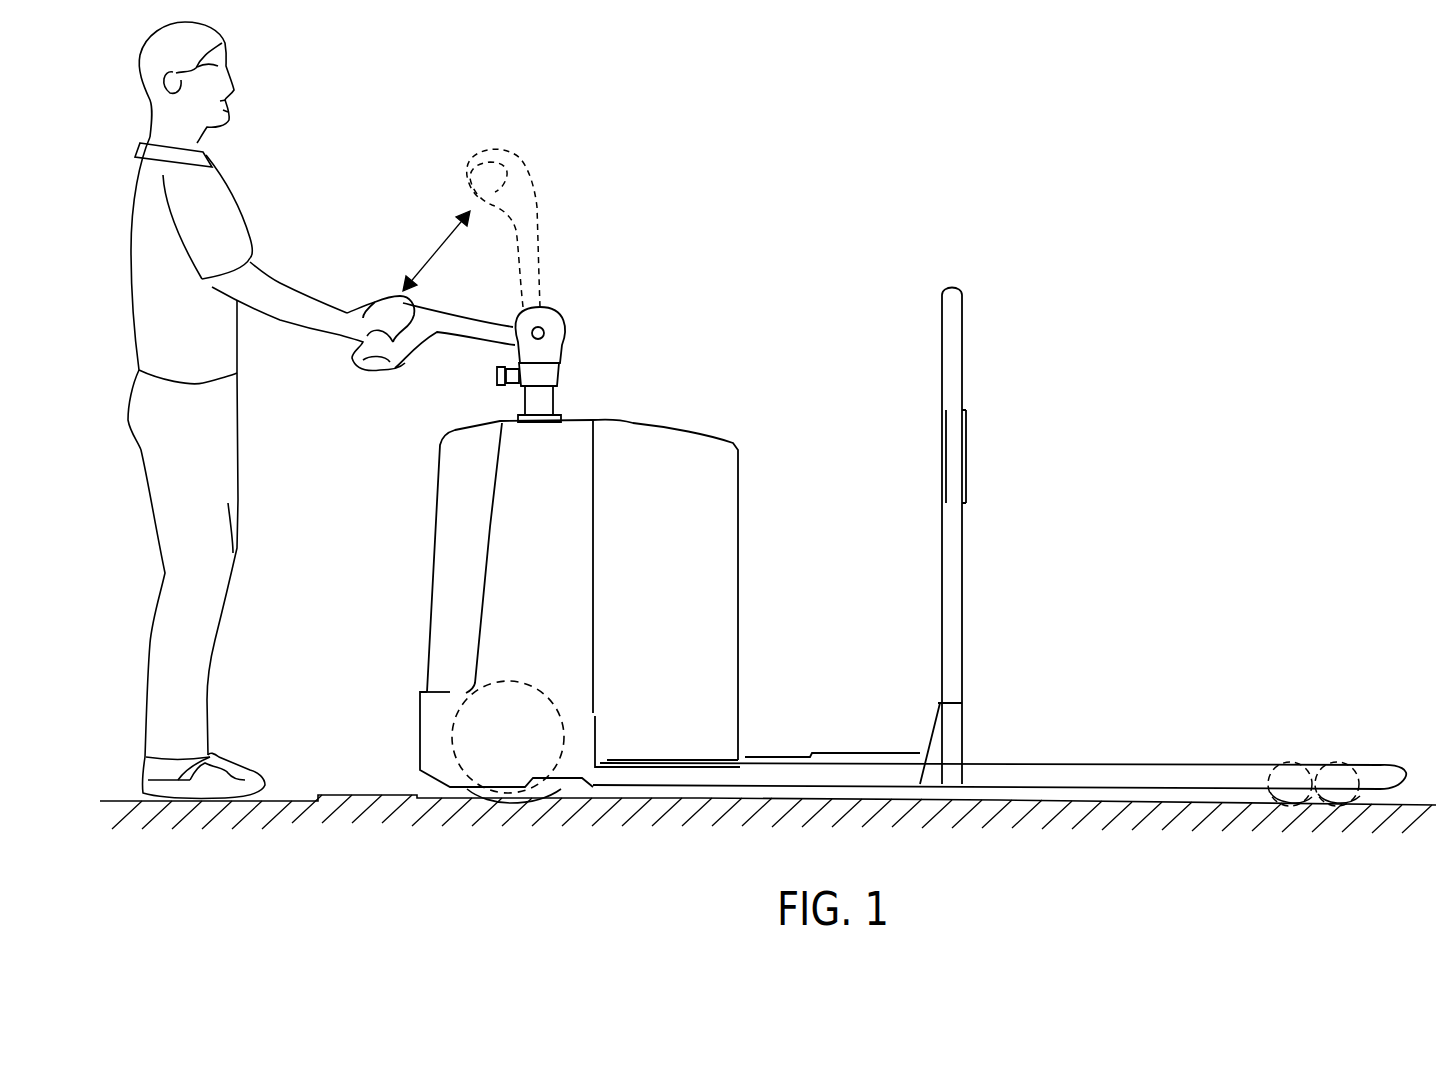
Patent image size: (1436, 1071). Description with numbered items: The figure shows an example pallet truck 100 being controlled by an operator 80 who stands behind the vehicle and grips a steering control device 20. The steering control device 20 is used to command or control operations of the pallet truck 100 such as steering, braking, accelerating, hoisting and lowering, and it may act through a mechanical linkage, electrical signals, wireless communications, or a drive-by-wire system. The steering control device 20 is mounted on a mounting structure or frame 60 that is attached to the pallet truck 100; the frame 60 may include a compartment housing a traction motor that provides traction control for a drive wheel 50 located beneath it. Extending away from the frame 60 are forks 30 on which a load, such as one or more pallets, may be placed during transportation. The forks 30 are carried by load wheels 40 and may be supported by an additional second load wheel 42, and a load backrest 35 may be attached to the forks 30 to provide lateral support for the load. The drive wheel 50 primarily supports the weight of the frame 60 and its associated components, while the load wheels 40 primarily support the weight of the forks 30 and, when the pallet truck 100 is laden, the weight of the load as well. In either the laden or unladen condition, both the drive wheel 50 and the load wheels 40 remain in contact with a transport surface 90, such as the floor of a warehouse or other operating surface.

The pallet truck 100 is at (1073, 206).
The operator 80 is at (135, 162).
The steering control device 20 is at (385, 300).
The mounting structure or frame 60 is at (578, 418).
The load backrest 35 is at (965, 455).
The drive wheel 50 is at (450, 743).
The forks 30 is at (1078, 763).
The load wheels 40 is at (1272, 778).
The second load wheel 42 is at (1344, 778).
The transport surface 90 is at (1392, 808).